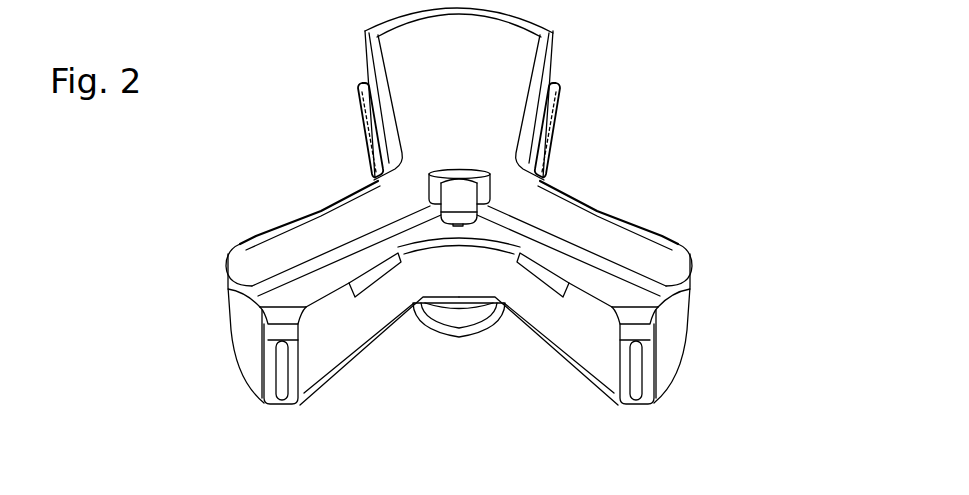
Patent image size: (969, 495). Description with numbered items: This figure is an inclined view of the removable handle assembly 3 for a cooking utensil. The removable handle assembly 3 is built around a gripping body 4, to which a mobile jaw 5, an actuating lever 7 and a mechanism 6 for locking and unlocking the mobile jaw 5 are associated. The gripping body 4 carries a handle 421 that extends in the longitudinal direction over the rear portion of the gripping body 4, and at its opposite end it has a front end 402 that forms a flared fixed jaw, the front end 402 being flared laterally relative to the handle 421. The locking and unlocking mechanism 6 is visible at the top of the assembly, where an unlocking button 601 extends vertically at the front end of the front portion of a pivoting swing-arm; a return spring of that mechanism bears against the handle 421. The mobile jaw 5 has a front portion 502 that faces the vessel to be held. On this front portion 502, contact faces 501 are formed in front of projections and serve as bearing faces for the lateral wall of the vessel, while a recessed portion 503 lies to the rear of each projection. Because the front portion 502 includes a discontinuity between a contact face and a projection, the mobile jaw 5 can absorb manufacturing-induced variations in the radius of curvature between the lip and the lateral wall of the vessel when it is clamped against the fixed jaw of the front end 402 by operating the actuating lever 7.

The removable handle assembly 3 is at (554, 36).
The handle 421 is at (383, 40).
The unlocking button 601 is at (458, 170).
The mechanism for locking and unlocking the mobile jaw 6 is at (494, 183).
The front end 402 is at (233, 246).
The gripping body 4 is at (696, 253).
The recessed portion 503 is at (402, 265).
The mobile jaw 5 is at (695, 344).
The actuating lever 7 is at (459, 342).
The front portion 502 is at (337, 362).
The contact faces 501 is at (271, 388).